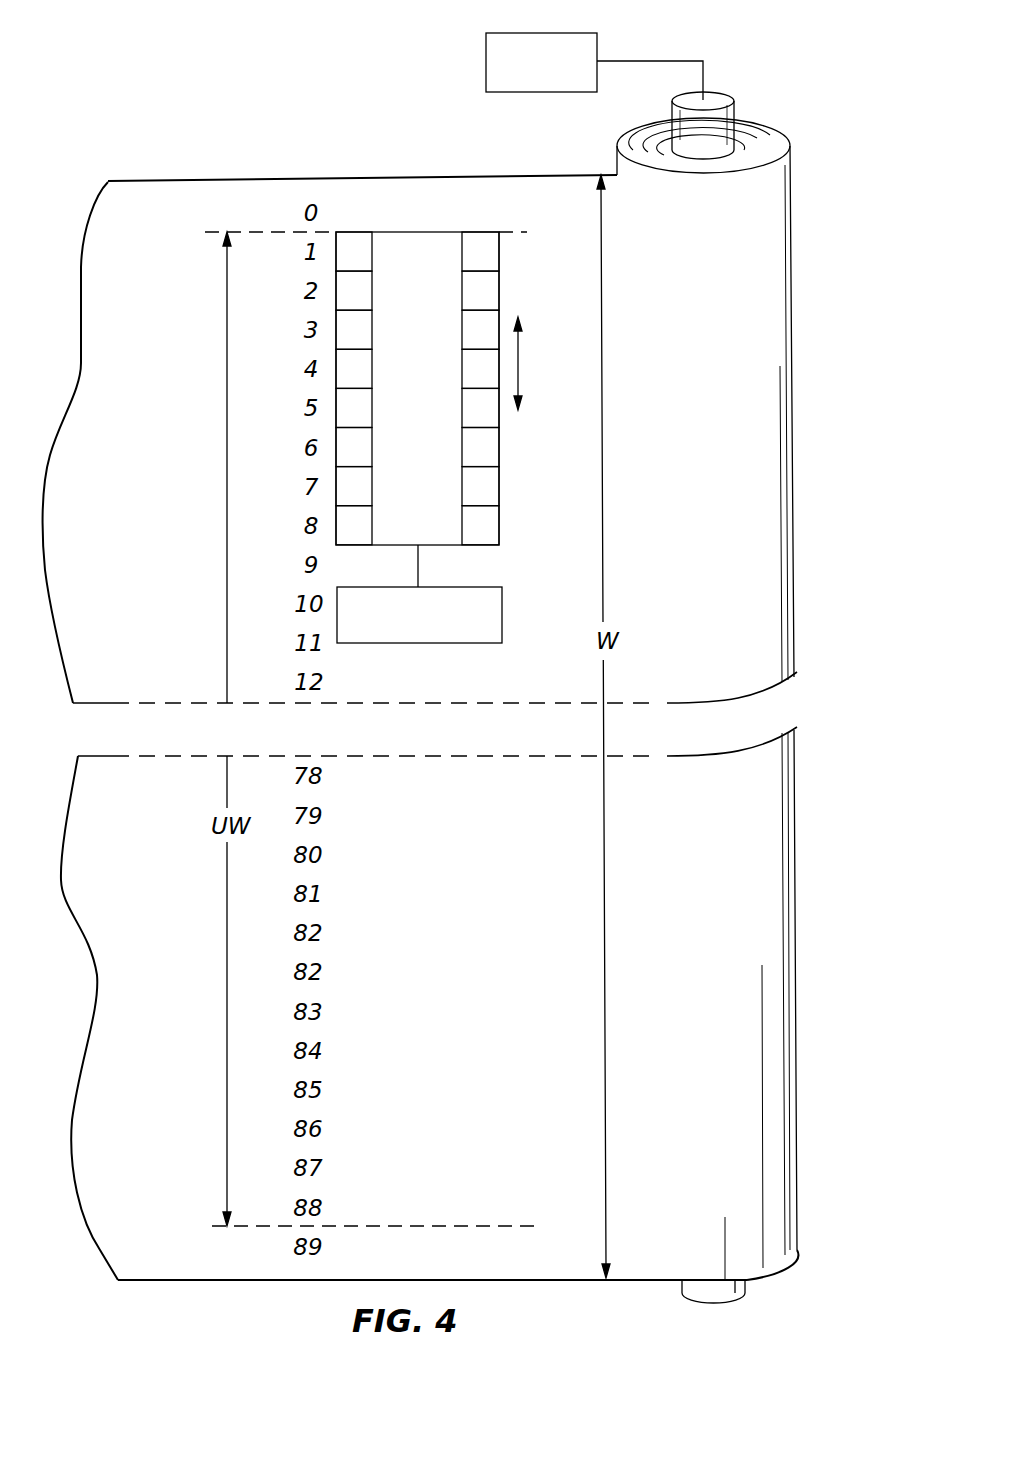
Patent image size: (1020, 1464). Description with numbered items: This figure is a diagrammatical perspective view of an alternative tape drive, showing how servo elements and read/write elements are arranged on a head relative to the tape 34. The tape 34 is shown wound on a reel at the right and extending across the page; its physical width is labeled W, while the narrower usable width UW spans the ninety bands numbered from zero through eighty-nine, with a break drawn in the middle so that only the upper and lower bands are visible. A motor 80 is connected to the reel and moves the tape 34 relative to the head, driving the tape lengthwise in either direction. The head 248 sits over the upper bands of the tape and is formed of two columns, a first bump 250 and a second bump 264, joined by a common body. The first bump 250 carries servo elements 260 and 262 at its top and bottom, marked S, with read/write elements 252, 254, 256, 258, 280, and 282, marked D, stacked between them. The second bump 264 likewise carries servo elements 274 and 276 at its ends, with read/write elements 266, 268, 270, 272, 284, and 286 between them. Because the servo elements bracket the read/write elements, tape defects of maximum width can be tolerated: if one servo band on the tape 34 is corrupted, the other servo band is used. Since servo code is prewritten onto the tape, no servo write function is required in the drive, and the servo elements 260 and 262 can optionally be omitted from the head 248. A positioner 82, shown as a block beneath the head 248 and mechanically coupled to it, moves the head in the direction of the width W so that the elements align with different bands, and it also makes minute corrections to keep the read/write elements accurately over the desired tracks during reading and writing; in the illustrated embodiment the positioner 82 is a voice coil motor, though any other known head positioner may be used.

The tape 34 is at (733, 286).
The motor 80 is at (552, 32).
The positioner 82 is at (462, 643).
The head 248 is at (418, 226).
The first bump 250 is at (353, 226).
The second bump 264 is at (477, 226).
The servo element 260 is at (338, 257).
The read/write element 252 is at (338, 296).
The read/write element 254 is at (338, 335).
The read/write element 256 is at (338, 374).
The read/write element 258 is at (338, 413).
The read/write element 280 is at (338, 452).
The read/write element 282 is at (338, 491).
The servo element 262 is at (338, 530).
The servo element 274 is at (497, 254).
The read/write element 266 is at (497, 293).
The read/write element 268 is at (497, 332).
The read/write element 270 is at (497, 371).
The read/write element 272 is at (497, 410).
The read/write element 284 is at (497, 449).
The read/write element 286 is at (497, 488).
The servo element 276 is at (497, 527).